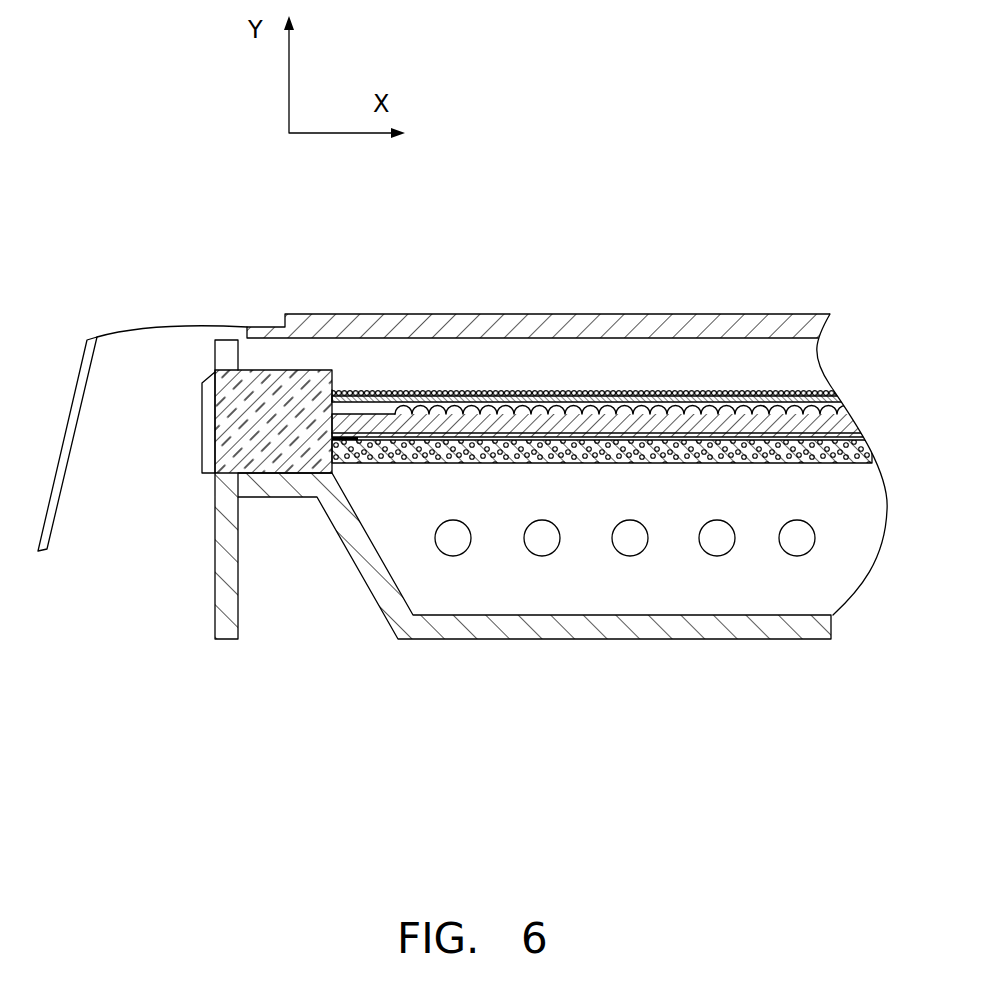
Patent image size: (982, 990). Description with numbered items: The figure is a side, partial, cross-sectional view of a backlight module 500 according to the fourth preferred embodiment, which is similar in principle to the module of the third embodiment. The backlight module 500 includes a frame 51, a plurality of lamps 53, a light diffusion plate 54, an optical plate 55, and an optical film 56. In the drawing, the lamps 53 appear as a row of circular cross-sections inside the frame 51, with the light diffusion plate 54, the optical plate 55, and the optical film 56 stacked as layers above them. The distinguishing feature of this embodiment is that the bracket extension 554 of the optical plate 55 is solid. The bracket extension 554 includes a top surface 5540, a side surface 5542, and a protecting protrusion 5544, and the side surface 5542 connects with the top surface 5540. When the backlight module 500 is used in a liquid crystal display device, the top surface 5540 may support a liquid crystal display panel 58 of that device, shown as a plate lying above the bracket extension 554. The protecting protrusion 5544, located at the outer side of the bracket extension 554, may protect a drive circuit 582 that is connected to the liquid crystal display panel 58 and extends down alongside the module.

The backlight module 500 is at (572, 94).
The liquid crystal display panel 58 is at (468, 325).
The top surface 5540 is at (289, 371).
The drive circuit 582 is at (73, 408).
The protecting protrusion 5544 is at (212, 397).
The side surface 5542 is at (215, 443).
The bracket extension 554 is at (253, 453).
The optical film 56 is at (836, 398).
The optical plate 55 is at (833, 423).
The light diffusion plate 54 is at (862, 453).
The frame 51 is at (460, 627).
The lamps 53 is at (542, 545).